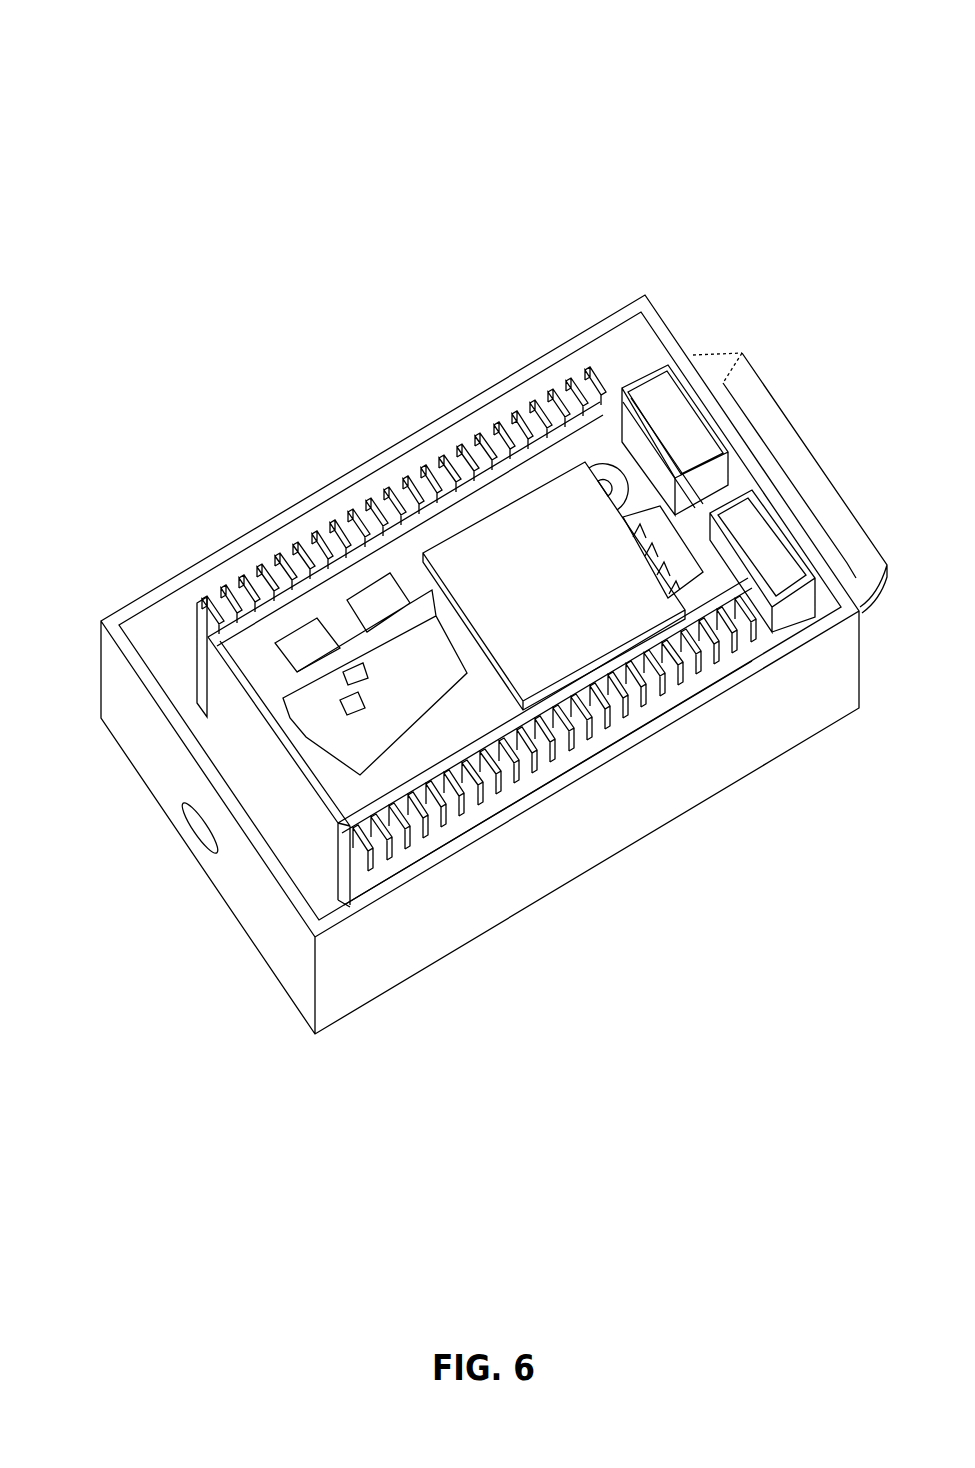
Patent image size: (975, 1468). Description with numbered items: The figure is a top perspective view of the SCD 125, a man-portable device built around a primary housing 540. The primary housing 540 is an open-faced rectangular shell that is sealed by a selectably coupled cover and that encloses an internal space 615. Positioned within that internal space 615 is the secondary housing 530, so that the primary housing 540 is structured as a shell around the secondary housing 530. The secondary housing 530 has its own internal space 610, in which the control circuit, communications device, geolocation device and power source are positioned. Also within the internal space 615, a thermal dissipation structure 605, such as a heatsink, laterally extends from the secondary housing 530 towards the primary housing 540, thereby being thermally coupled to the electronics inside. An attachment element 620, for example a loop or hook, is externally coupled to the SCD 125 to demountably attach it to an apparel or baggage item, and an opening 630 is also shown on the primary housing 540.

The SCD 125 is at (177, 126).
The secondary housing 530 is at (261, 748).
The primary housing 540 is at (607, 832).
The thermal dissipation structure 605 is at (487, 430).
The internal space 610 is at (343, 640).
The internal space 615 is at (186, 700).
The attachment element 620 is at (808, 447).
The aperture 630 is at (197, 833).